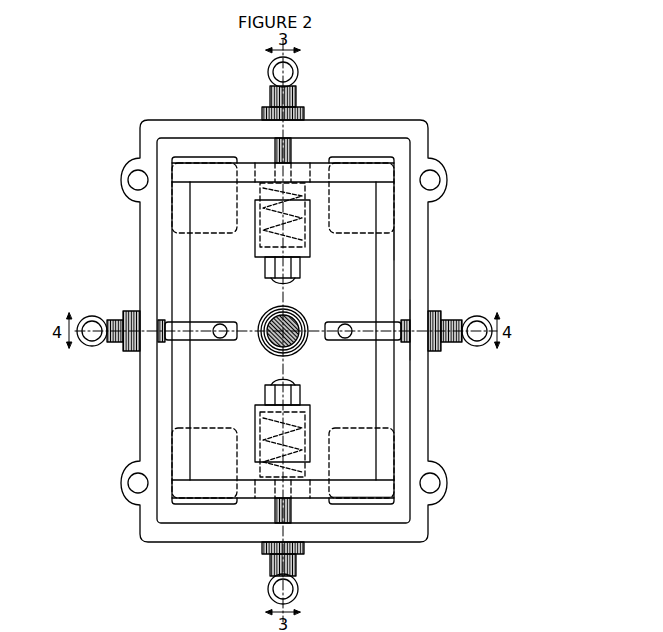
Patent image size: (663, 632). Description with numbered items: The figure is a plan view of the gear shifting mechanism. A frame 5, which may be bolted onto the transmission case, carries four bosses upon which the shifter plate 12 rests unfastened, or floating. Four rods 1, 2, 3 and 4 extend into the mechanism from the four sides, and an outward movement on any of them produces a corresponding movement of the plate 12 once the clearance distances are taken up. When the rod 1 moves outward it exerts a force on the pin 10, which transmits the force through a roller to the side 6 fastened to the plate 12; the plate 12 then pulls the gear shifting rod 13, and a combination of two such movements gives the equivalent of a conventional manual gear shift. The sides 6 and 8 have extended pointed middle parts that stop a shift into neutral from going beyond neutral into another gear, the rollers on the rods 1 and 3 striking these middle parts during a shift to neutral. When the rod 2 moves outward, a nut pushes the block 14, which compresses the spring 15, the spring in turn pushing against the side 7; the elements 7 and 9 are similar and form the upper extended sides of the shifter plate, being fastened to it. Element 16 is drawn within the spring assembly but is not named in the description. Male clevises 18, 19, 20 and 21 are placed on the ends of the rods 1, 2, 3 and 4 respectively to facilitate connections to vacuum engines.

The rod 1 is at (203, 322).
The rod 2 is at (292, 150).
The rod 3 is at (365, 321).
The rod 4 is at (296, 514).
The frame 5 is at (428, 267).
The side 6 is at (172, 270).
The side 7 is at (204, 185).
The side 8 is at (396, 245).
The side 9 is at (350, 498).
The pin 10 is at (232, 323).
The shifter plate 12 is at (355, 388).
The gear shifting rod 13 is at (292, 316).
The block 14 is at (310, 254).
The spring 15 is at (308, 211).
The plunger 16 is at (305, 191).
The male clevis 18 is at (96, 318).
The male clevis 19 is at (298, 72).
The male clevis 20 is at (474, 318).
The male clevis 21 is at (300, 587).